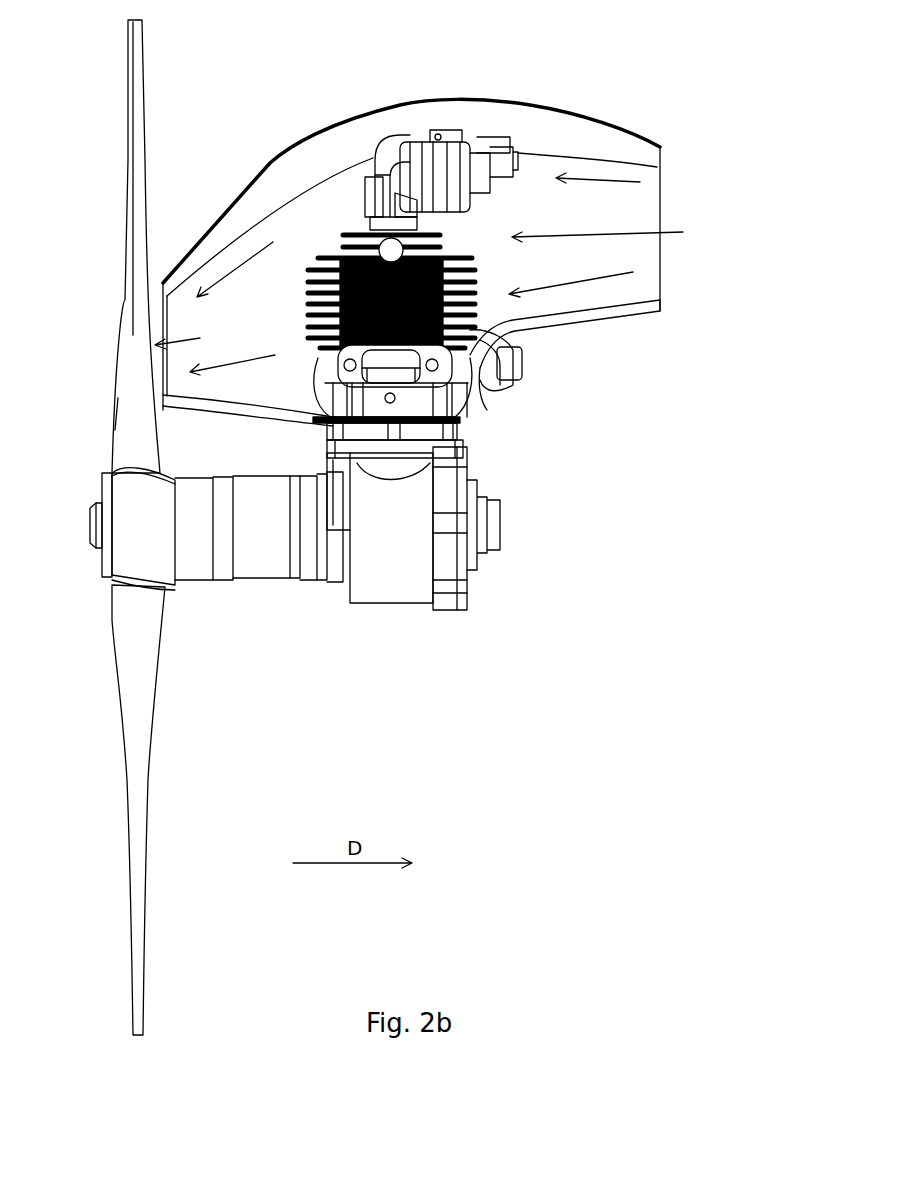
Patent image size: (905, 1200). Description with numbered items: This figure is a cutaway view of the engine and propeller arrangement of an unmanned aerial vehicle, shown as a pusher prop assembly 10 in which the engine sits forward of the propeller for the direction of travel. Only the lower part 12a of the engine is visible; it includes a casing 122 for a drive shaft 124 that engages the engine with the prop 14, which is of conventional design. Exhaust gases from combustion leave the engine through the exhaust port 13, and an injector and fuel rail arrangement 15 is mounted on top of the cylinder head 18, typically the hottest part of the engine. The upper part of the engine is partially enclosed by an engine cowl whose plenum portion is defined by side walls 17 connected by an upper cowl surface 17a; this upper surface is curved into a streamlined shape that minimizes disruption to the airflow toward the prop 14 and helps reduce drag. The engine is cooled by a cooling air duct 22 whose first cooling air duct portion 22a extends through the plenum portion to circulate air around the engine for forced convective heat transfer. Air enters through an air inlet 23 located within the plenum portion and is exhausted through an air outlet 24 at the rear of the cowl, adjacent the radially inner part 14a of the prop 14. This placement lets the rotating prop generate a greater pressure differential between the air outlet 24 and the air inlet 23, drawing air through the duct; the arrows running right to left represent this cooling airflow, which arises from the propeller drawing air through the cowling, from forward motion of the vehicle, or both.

The pusher prop assembly 10 is at (253, 578).
The lower part of engine 12a is at (397, 573).
The exhaust port 13 is at (390, 360).
The prop 14 is at (125, 199).
The radially inner part of the prop 14a is at (118, 398).
The injector and fuel rail arrangement 15 is at (412, 140).
The side walls 17 is at (330, 200).
The upper cowl surface 17a is at (360, 112).
The cylinder head 18 is at (327, 253).
The cooling air duct 22 is at (483, 265).
The first cooling air duct portion 22a is at (587, 200).
The air inlet 23 is at (668, 275).
The air outlet 24 is at (163, 317).
The casing 122 is at (263, 535).
The drive shaft 124 is at (90, 522).